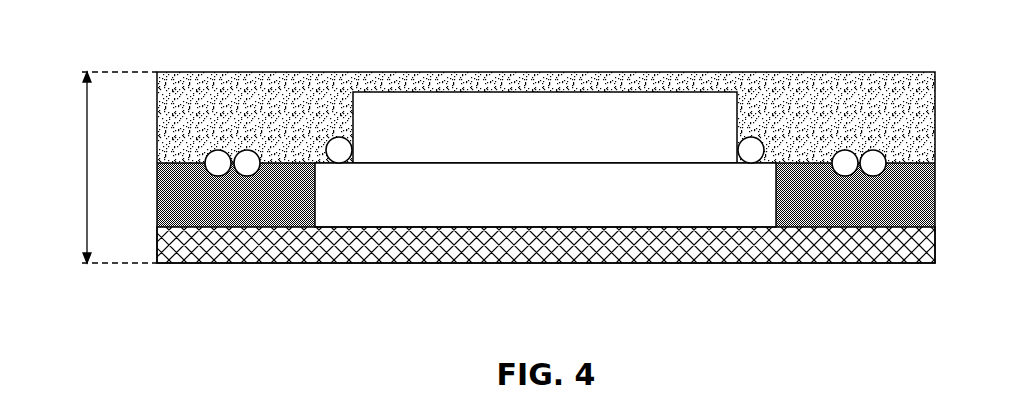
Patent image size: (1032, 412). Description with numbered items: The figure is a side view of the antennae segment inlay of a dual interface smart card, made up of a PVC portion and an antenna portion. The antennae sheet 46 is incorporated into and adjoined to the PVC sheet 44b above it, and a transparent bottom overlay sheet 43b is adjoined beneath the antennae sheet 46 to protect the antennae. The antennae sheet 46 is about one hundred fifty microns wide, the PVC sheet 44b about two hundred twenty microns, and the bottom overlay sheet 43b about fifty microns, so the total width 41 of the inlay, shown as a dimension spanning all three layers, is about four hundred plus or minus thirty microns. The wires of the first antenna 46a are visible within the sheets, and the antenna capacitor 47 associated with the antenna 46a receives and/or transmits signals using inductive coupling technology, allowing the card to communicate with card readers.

The total width 41 is at (87, 153).
The transparent bottom overlay sheet 43b is at (235, 245).
The PVC sheet 44b is at (883, 92).
The antennae sheet 46 is at (842, 223).
The first antenna 46a is at (247, 160).
The antenna capacitor 47 is at (647, 228).